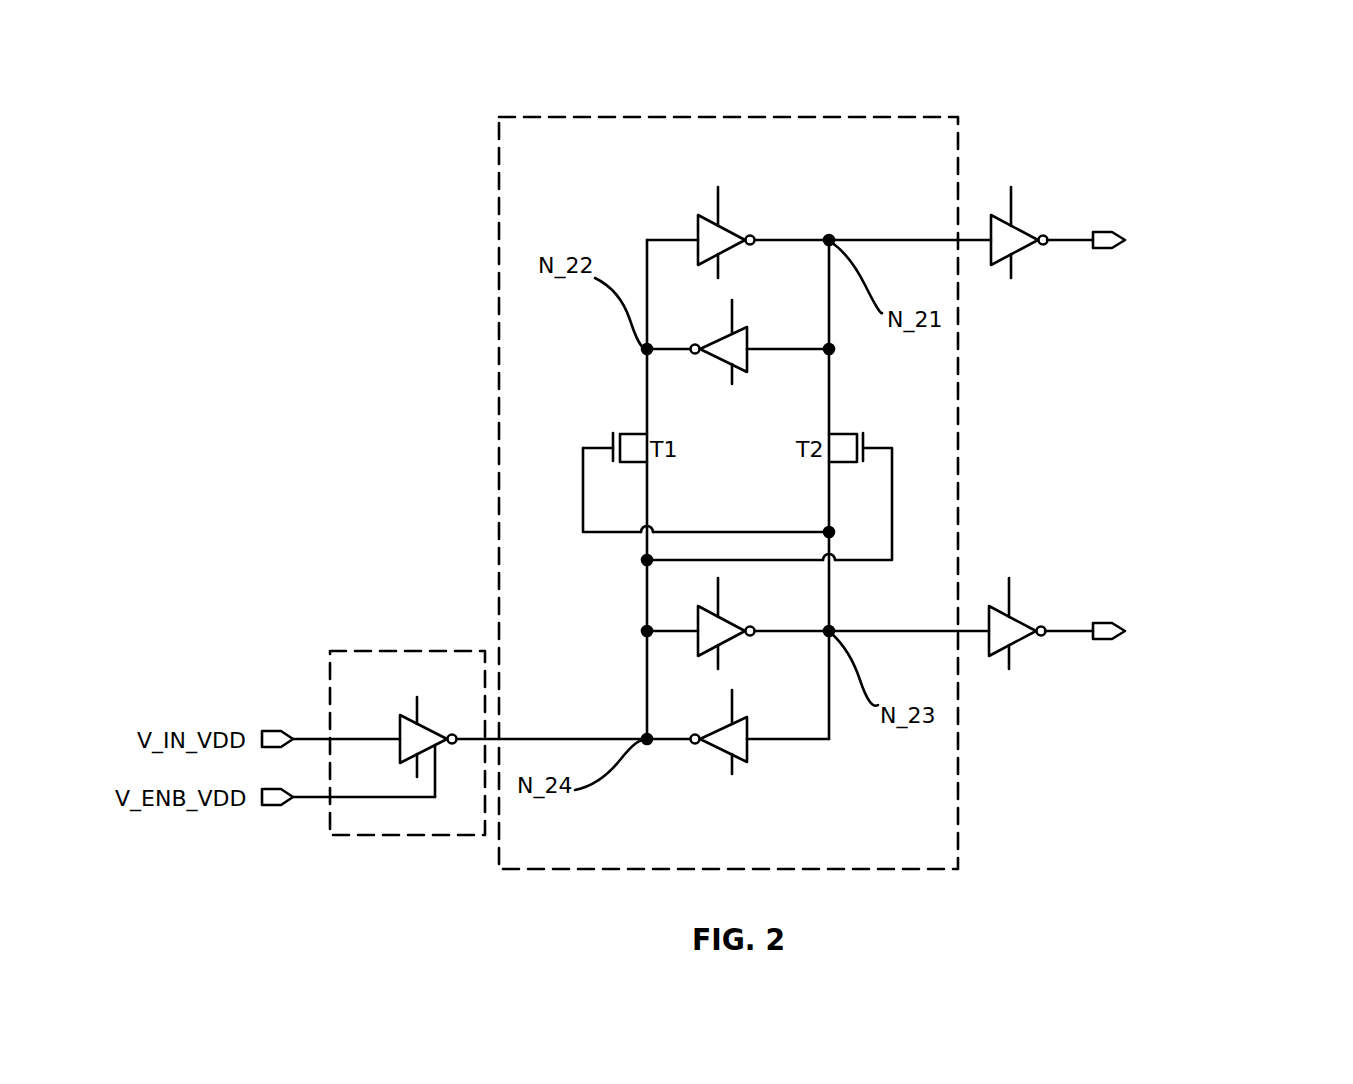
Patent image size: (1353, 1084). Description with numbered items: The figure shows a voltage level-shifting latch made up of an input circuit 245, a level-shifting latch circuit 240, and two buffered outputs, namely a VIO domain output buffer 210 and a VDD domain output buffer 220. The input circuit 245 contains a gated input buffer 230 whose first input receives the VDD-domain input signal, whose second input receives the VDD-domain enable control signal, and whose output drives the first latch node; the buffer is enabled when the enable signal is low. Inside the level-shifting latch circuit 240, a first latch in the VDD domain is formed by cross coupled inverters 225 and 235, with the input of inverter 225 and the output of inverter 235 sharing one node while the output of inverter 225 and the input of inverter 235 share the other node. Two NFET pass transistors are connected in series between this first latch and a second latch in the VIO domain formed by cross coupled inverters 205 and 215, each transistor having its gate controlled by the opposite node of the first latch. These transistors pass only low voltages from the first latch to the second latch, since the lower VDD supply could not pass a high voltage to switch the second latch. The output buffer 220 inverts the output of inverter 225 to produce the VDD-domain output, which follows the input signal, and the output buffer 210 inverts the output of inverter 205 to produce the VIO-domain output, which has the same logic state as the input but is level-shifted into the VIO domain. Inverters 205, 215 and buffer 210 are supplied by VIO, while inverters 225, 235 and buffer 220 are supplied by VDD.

The inverter 205 is at (725, 228).
The VIO domain output buffer 210 is at (1020, 232).
The inverter 215 is at (735, 368).
The VDD domain output buffer 220 is at (1020, 625).
The inverter 225 is at (725, 645).
The gated input buffer 230 is at (405, 722).
The inverter 235 is at (735, 757).
The level-shifting latch circuit 240 is at (498, 165).
The input circuit 245 is at (400, 650).